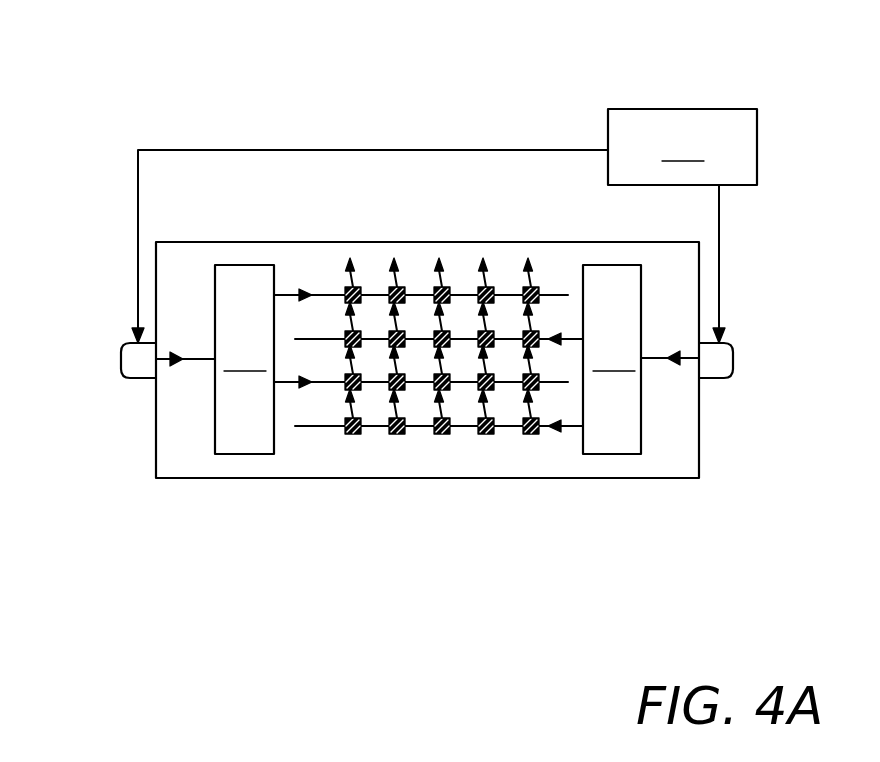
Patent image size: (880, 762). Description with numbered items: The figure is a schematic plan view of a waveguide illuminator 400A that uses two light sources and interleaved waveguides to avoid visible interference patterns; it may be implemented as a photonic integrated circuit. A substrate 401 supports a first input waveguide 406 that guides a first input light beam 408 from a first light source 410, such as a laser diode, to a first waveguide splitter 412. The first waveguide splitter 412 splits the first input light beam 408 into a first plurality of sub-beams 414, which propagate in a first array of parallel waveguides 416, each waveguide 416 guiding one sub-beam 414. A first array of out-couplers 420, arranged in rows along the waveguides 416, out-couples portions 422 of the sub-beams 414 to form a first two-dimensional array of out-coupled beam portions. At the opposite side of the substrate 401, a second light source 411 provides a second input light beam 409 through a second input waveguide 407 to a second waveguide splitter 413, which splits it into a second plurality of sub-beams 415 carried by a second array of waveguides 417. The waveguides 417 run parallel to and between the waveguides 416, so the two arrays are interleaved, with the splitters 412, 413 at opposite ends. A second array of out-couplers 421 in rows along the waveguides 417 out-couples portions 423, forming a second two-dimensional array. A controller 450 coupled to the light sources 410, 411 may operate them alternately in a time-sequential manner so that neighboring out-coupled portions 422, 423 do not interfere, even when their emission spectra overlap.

The waveguide illuminator 400A is at (177, 80).
The substrate 401 is at (617, 472).
The first input waveguide 406 is at (197, 363).
The second input waveguide 407 is at (657, 352).
The first input light beam 408 is at (168, 362).
The second input light beam 409 is at (682, 365).
The first light source 410 is at (130, 360).
The second light source 411 is at (720, 359).
The first waveguide splitter 412 is at (244, 359).
The second waveguide splitter 413 is at (612, 359).
The first plurality of sub-beams 414 is at (287, 384).
The second plurality of sub-beams 415 is at (563, 428).
The first array of waveguides 416 is at (325, 293).
The second array of waveguides 417 is at (320, 428).
The first array of out-couplers 420 is at (362, 286).
The second array of out-couplers 421 is at (397, 435).
The out-coupled sub-beam portions 422 is at (441, 280).
The out-coupled sub-beam portions 423 is at (536, 323).
The controller 450 is at (444, 226).